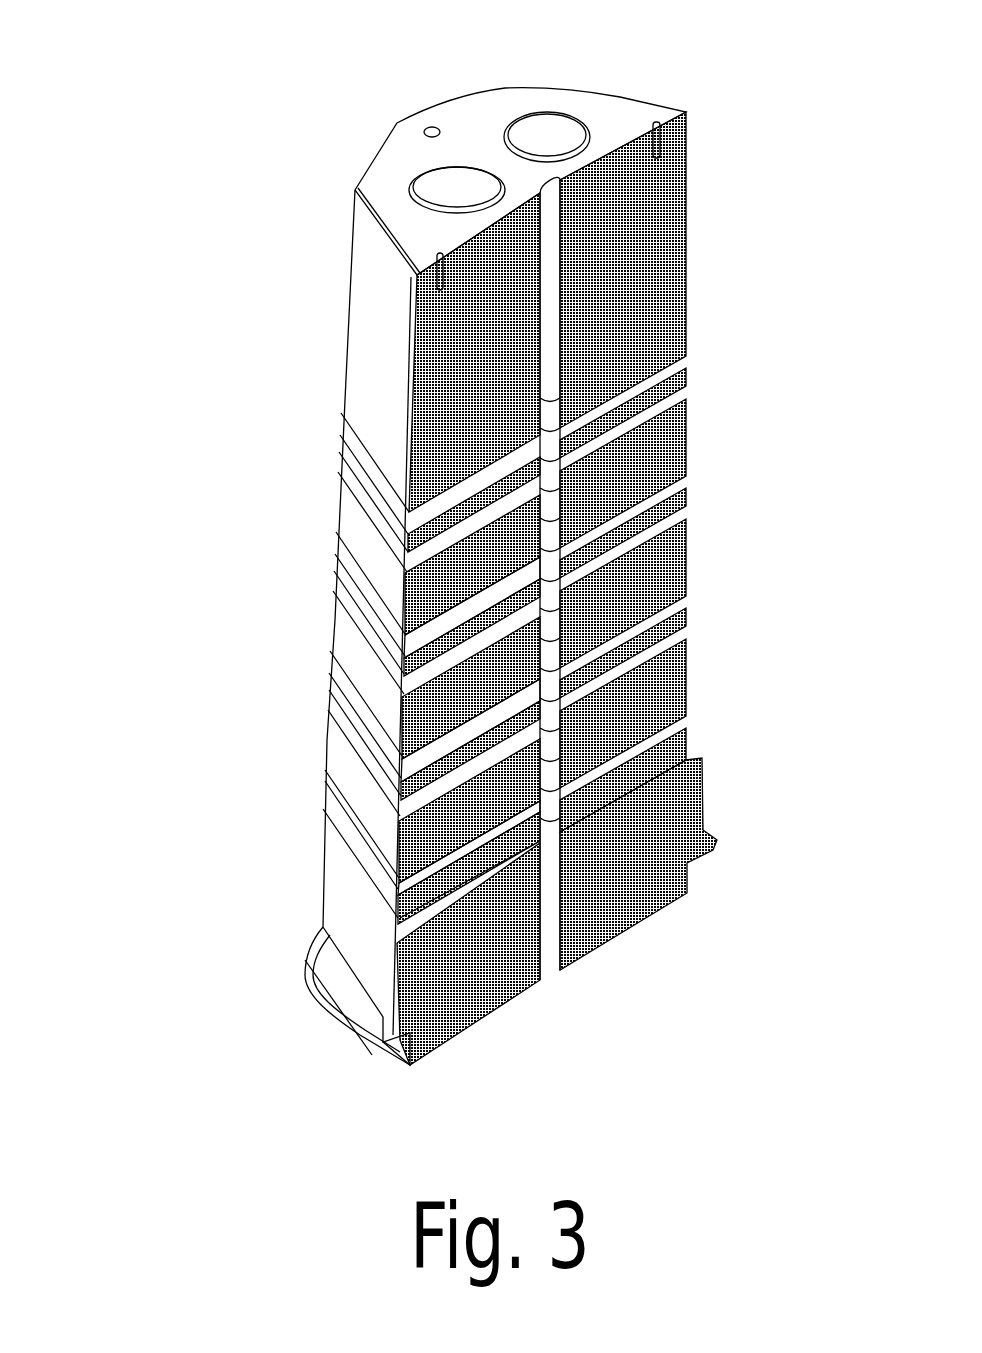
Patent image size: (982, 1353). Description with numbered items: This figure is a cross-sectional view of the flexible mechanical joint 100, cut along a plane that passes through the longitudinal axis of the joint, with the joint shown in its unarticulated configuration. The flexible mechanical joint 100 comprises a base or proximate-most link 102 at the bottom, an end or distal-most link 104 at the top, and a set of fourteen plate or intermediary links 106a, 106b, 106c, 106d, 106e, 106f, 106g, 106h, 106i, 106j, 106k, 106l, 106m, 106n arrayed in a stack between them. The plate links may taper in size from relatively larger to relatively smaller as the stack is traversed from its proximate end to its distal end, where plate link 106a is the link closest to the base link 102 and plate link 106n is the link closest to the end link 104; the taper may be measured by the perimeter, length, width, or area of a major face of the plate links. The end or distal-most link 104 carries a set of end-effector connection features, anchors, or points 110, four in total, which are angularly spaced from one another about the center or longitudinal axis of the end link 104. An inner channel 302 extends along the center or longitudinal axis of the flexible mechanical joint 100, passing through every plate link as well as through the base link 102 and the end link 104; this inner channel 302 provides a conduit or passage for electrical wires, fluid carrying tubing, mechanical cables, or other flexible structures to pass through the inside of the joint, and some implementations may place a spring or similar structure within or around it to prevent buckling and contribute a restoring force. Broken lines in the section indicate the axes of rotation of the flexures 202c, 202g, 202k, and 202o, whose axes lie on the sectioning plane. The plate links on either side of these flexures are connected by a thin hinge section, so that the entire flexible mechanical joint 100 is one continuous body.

The flexible mechanical joint 100 is at (176, 71).
The base or proximate-most link 102 is at (703, 803).
The end or distal-most link 104 is at (688, 283).
The plate or intermediary link 106a is at (700, 705).
The plate or intermediary link 106b is at (410, 882).
The plate or intermediary link 106c is at (700, 645).
The plate or intermediary link 106d is at (410, 820).
The plate or intermediary link 106e is at (700, 585).
The plate or intermediary link 106f is at (410, 752).
The plate or intermediary link 106g is at (698, 525).
The plate or intermediary link 106h is at (410, 695).
The plate or intermediary link 106i is at (698, 463).
The plate or intermediary link 106j is at (410, 628).
The plate or intermediary link 106k is at (696, 402).
The plate or intermediary link 106l is at (410, 572).
The plate or intermediary link 106m is at (693, 363).
The plate or intermediary link 106n is at (410, 505).
The end-effector connection features, anchors, or points 110 is at (660, 140).
The flexure 202c is at (405, 866).
The flexure 202g is at (405, 738).
The flexure 202k is at (405, 612).
The flexure 202o is at (405, 491).
The inner channel 302 is at (548, 190).